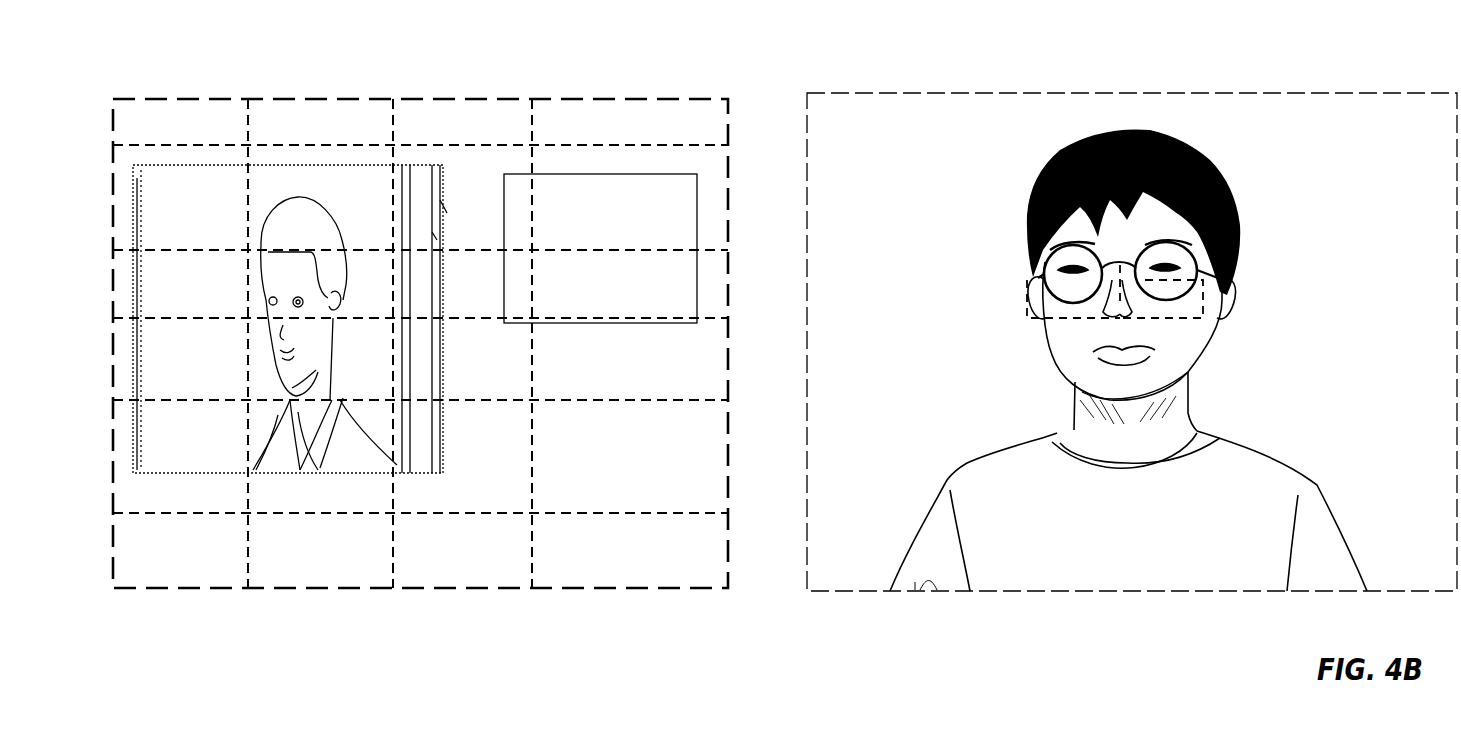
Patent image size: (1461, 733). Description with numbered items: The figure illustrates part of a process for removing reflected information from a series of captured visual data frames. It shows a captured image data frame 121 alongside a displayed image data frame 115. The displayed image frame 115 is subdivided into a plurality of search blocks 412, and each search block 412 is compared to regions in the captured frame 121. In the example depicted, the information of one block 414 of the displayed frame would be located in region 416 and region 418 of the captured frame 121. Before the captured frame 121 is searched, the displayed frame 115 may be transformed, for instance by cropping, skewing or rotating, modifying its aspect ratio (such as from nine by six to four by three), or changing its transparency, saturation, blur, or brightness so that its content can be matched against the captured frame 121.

The displayed image data frame 115 is at (288, 98).
The search blocks 412 is at (665, 123).
The block 414 is at (684, 272).
The captured image data frame 121 is at (1300, 90).
The region 416 is at (1021, 281).
The region 418 is at (1234, 281).